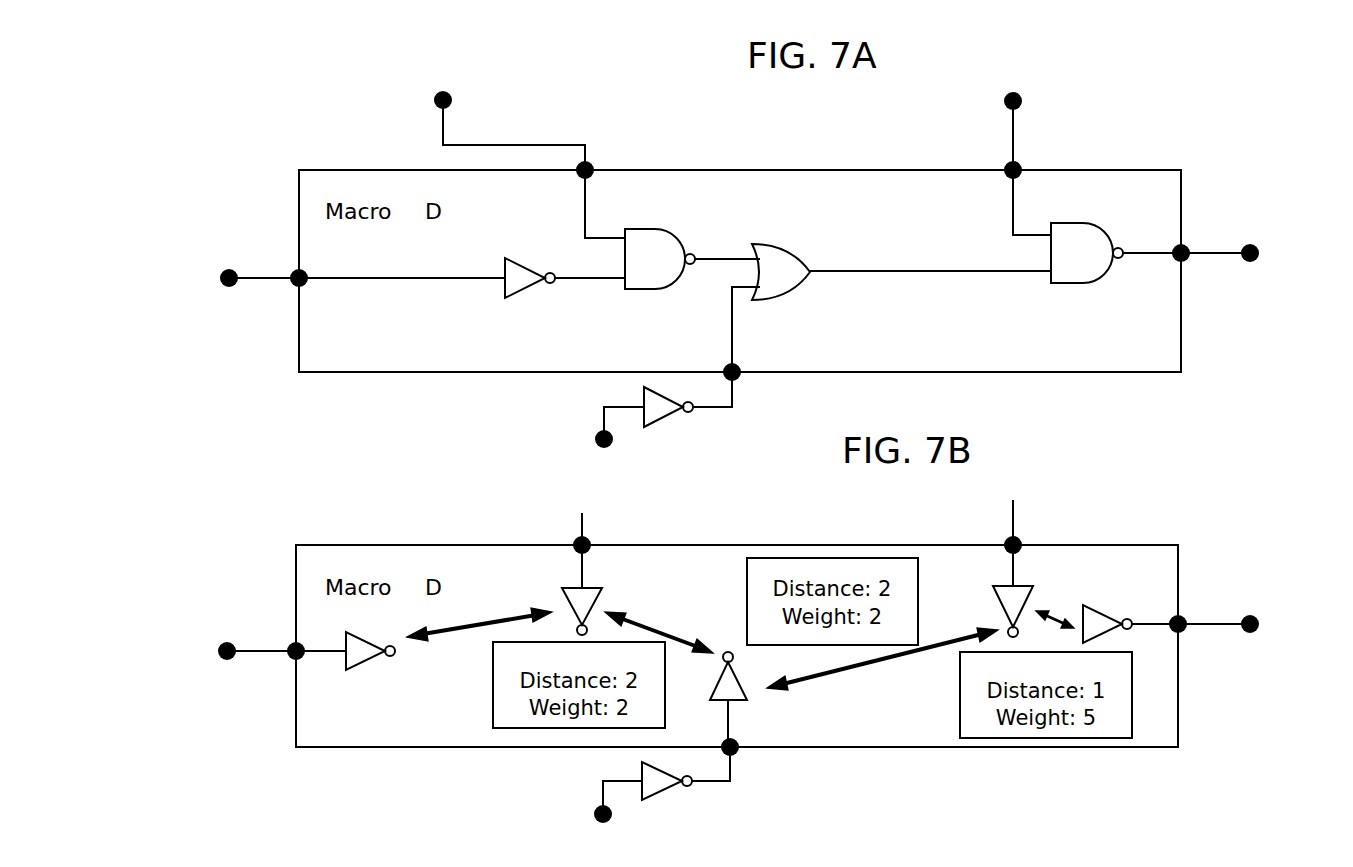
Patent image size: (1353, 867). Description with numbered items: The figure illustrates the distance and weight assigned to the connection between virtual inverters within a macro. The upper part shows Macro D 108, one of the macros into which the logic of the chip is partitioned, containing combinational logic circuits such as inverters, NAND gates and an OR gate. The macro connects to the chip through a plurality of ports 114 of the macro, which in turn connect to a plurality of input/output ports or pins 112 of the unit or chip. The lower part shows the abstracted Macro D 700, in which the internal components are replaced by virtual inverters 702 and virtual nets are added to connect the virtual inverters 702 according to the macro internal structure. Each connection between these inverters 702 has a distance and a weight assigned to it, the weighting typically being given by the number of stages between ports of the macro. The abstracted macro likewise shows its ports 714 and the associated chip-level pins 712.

In FIG. 7A, the Macro D 108 is at (823, 182).
In FIG. 7A, the input/output ports or pins 112 is at (222, 270).
In FIG. 7A, the ports 114 is at (435, 97).
In FIG. 7B, the abstracted Macro D 700 is at (700, 555).
In FIG. 7B, the virtual inverters 702 is at (367, 660).
In FIG. 7B, the external pin 712 is at (222, 660).
In FIG. 7B, the pin / connection point 714 is at (290, 645).